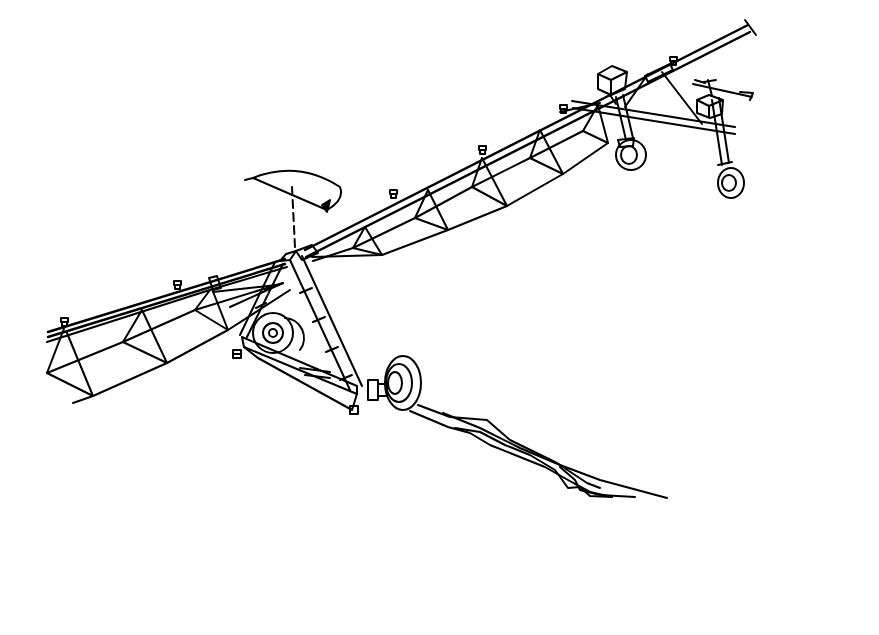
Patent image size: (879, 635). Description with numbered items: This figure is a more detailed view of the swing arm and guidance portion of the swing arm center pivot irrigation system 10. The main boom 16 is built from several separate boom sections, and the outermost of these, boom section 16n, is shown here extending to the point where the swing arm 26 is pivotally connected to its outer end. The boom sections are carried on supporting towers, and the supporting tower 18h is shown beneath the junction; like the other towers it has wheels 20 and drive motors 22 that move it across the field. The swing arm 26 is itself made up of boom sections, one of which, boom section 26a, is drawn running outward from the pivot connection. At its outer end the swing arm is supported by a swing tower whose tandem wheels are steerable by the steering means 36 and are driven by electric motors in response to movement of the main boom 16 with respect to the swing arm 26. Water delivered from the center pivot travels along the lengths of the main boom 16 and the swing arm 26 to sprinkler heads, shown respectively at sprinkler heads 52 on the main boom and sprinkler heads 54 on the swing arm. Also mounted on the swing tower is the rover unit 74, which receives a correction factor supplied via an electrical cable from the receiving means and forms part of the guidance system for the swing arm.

The swing arm center pivot irrigation system 10 is at (148, 398).
The main boom 16 is at (165, 294).
The boom section 16n is at (133, 303).
The supporting tower 18h is at (333, 303).
The wheels 20 is at (410, 376).
The drive motors 22 is at (369, 376).
The swing arm 26 is at (498, 143).
The boom section 26a is at (443, 170).
The steering means 36 is at (612, 65).
The sprinkler heads 52 is at (64, 316).
The sprinkler heads 54 is at (393, 191).
The rover unit 74 is at (714, 86).